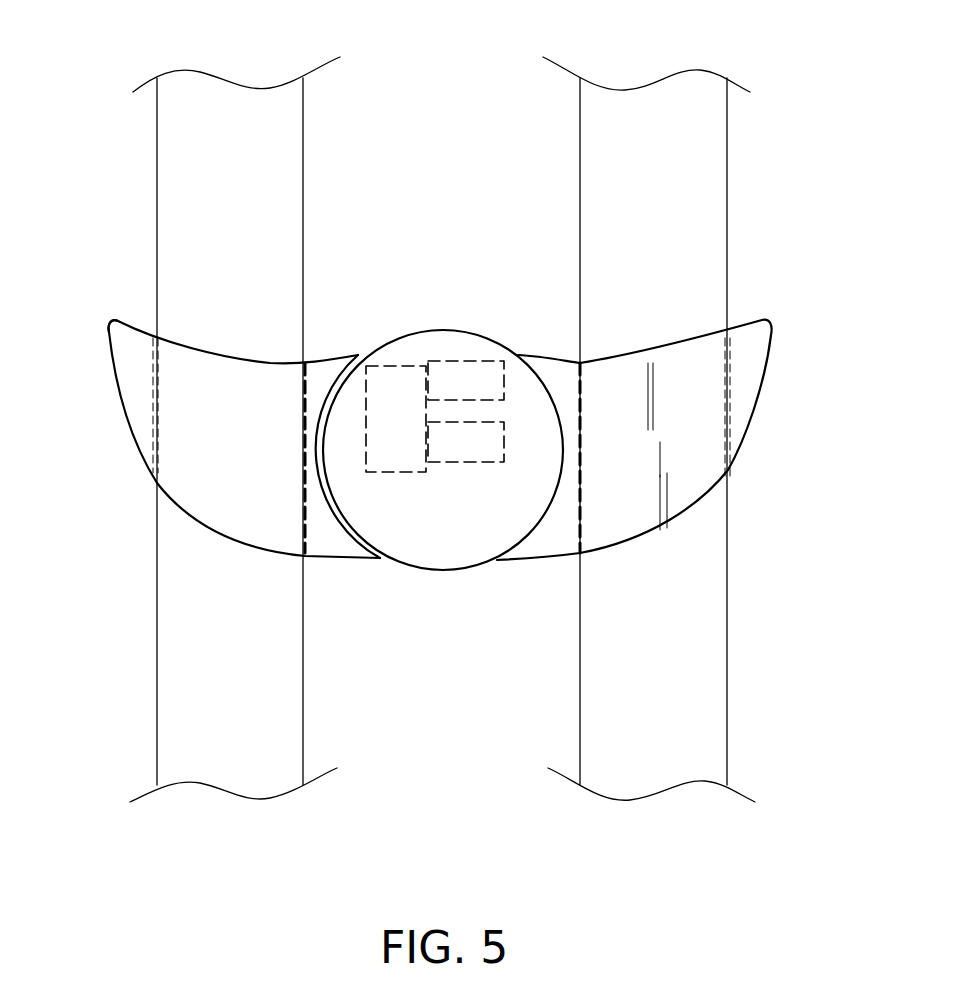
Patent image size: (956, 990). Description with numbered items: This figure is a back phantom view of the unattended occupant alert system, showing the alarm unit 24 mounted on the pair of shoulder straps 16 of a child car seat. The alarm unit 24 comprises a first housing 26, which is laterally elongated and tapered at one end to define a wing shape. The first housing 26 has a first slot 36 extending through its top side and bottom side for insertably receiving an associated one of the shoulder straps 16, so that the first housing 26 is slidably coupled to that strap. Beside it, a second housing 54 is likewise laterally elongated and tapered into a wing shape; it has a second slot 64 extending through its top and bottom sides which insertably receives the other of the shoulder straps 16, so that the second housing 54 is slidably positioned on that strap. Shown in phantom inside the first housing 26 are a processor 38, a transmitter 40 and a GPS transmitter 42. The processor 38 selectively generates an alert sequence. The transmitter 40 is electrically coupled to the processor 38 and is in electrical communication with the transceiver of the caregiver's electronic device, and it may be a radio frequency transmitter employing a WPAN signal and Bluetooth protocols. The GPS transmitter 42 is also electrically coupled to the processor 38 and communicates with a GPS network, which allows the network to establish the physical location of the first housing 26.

The shoulder straps 16 is at (580, 210).
The alarm unit 24 is at (445, 590).
The first housing 26 is at (760, 410).
The first slot 36 is at (728, 380).
The processor 38 is at (399, 378).
The transmitter 40 is at (466, 360).
The GPS transmitter 42 is at (465, 462).
The second housing 54 is at (110, 322).
The second slot 64 is at (158, 365).